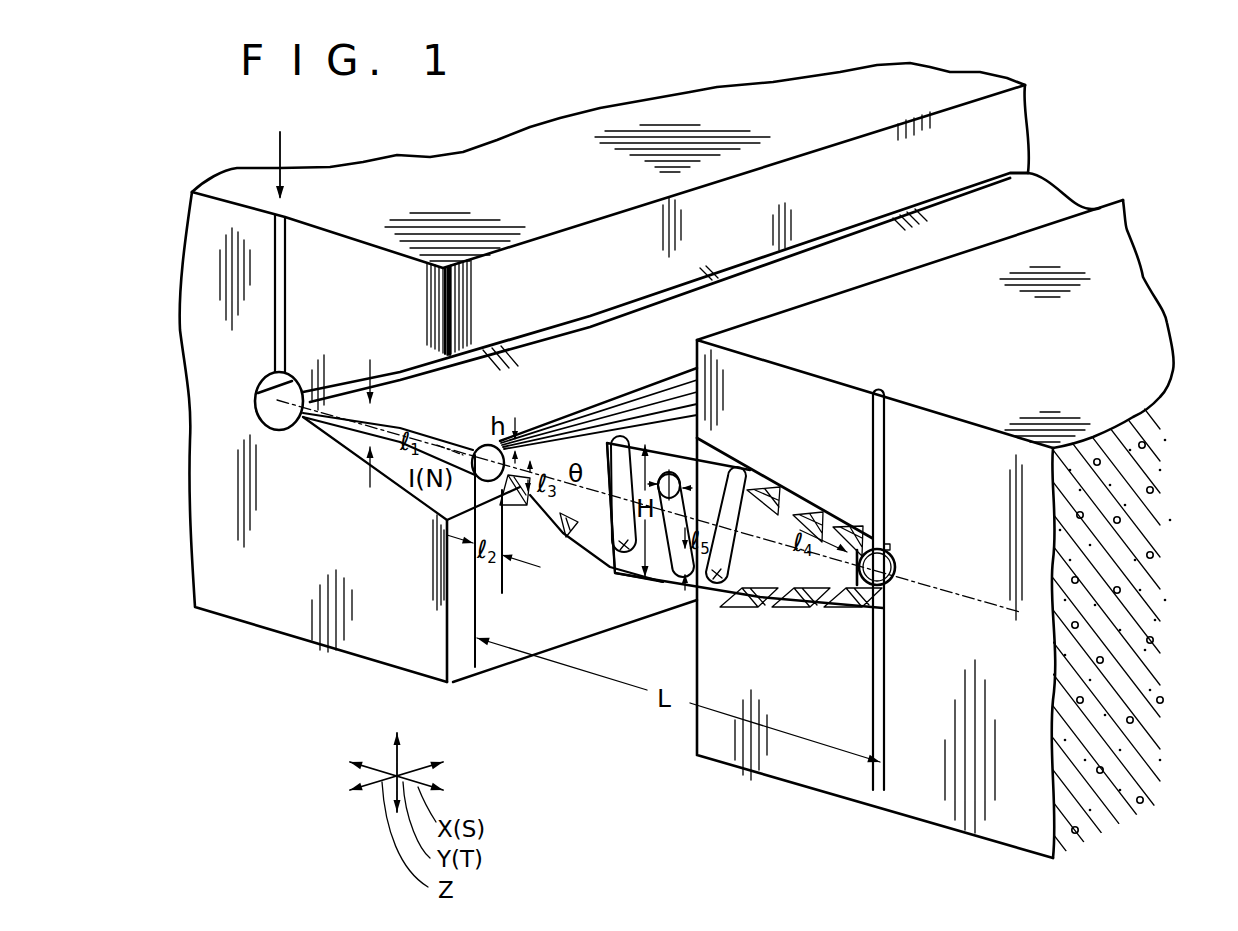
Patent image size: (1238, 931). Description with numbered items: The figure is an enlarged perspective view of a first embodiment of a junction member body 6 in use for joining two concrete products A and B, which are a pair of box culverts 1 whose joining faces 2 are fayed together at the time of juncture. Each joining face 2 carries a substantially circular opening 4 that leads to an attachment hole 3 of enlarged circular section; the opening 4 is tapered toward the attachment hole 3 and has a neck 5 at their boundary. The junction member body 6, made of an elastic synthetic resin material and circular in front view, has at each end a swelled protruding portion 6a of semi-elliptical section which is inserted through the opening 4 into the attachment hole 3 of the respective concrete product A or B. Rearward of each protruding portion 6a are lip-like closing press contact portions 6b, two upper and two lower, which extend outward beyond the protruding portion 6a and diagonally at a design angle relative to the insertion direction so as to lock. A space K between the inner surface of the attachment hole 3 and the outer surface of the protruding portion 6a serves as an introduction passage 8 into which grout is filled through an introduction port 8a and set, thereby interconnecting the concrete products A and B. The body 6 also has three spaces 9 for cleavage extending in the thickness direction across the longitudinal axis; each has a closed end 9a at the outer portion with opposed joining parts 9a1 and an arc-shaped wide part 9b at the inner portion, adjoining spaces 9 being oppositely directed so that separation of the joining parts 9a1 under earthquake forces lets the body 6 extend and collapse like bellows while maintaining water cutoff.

The box culvert 1 is at (537, 153).
The joining face 2 is at (783, 187).
The attachment hole 3 is at (262, 390).
The circular opening 4 is at (580, 347).
The neck 5 is at (305, 395).
The junction member body 6 is at (668, 427).
The protruding portion 6a is at (480, 447).
The closing press contact portion 6b is at (540, 433).
The introduction passage 8 is at (877, 613).
The introduction port 8a is at (283, 210).
The space for cleavage 9 is at (690, 530).
The closed end 9a is at (618, 440).
The joining part 9a1 is at (653, 600).
The wide part 9b is at (680, 490).
The concrete product A is at (633, 130).
The concrete product B is at (1117, 293).
The space K is at (887, 527).